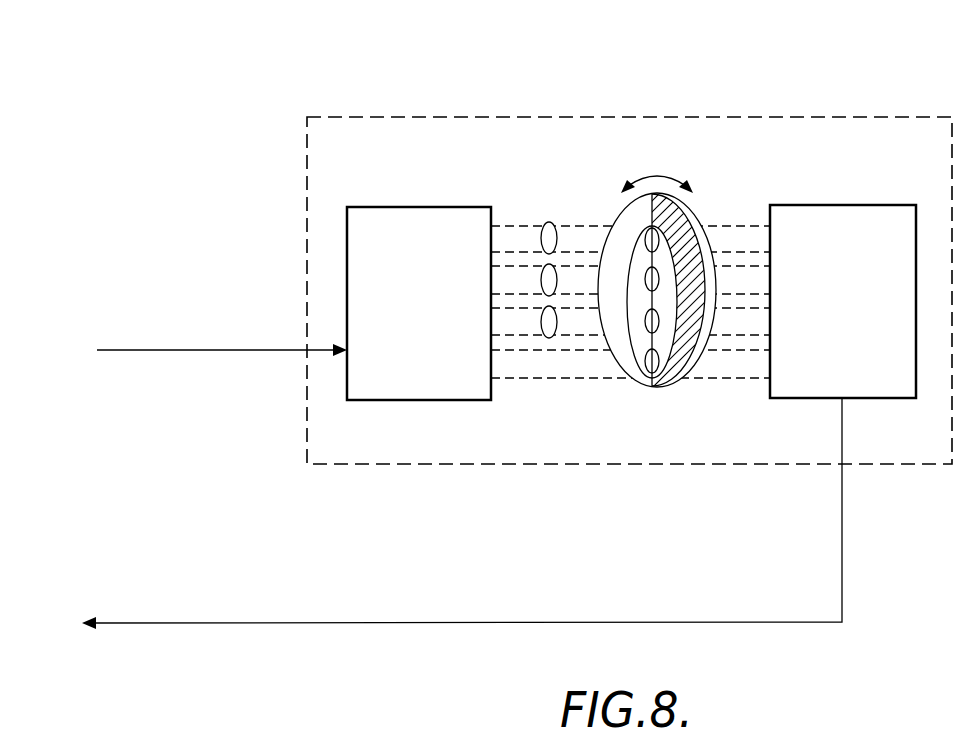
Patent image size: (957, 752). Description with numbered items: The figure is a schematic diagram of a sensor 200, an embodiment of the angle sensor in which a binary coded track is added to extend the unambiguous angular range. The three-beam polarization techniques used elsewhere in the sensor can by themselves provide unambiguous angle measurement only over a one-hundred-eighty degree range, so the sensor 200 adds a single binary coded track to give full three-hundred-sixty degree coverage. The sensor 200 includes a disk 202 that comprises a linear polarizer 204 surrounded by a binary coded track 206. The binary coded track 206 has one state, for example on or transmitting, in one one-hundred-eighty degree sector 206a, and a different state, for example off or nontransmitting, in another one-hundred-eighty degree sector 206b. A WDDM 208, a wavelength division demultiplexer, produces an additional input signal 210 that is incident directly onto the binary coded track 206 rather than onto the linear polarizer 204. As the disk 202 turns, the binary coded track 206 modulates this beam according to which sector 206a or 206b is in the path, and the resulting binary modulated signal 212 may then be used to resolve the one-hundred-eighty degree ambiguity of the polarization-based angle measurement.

The sensor 200 is at (650, 117).
The disk 202 is at (652, 397).
The linear polarizer 204 is at (665, 314).
The binary coded track 206 is at (652, 383).
The sector 206a is at (623, 211).
The sector 206b is at (684, 207).
The WDDM 208 is at (420, 400).
The input signal 210 is at (546, 378).
The binary modulated signal 212 is at (742, 378).